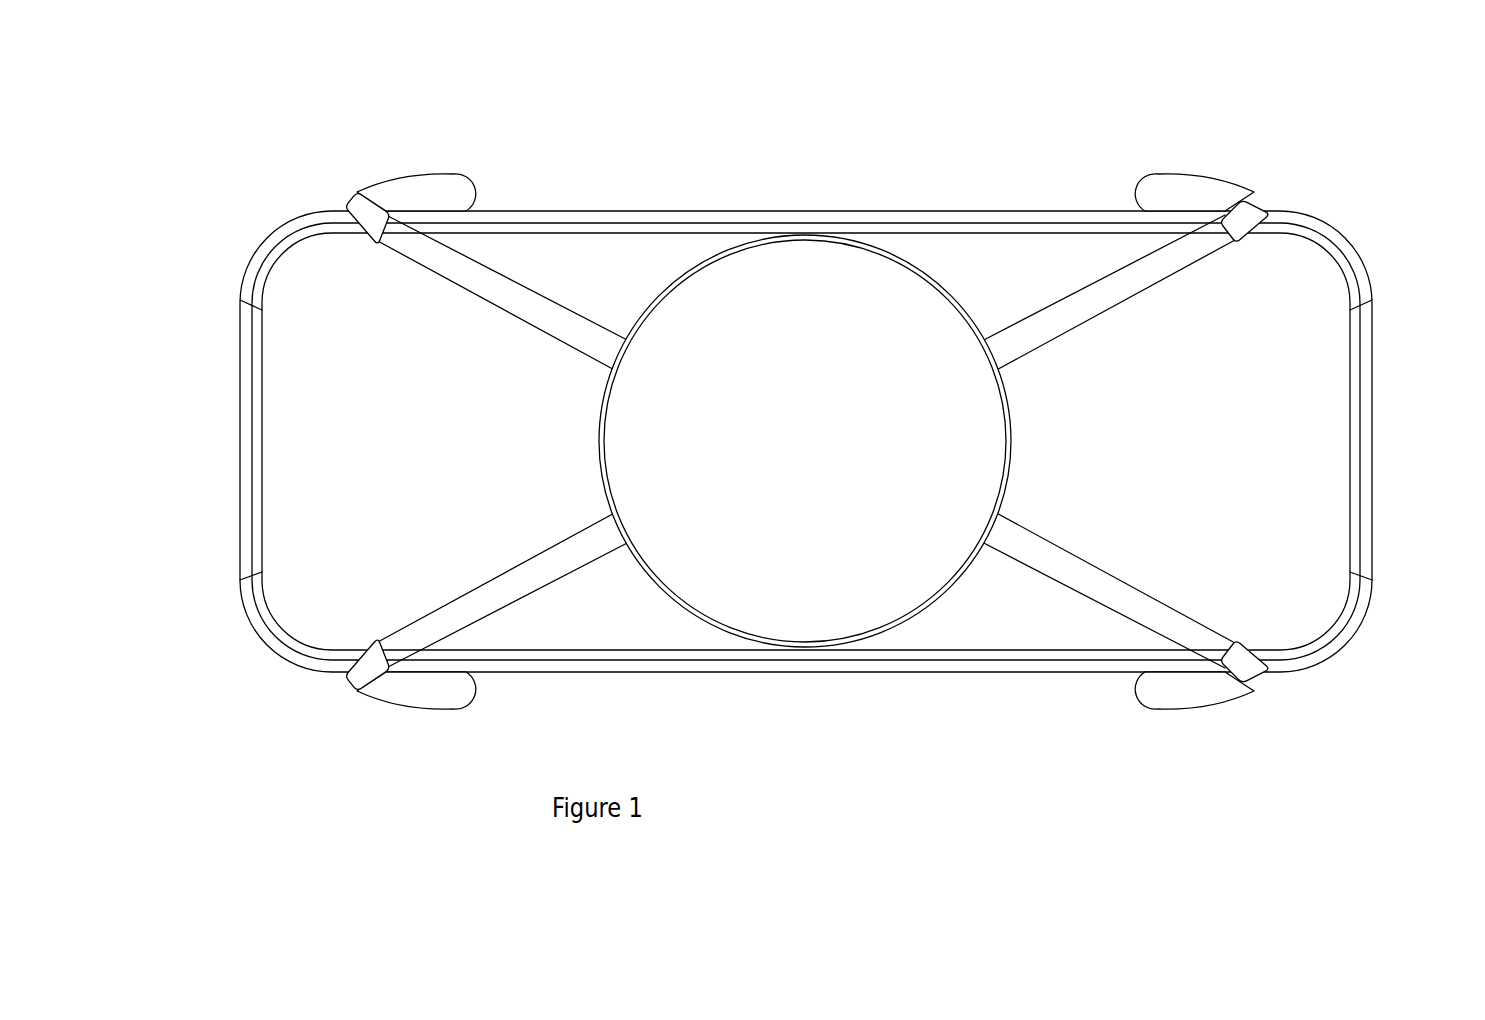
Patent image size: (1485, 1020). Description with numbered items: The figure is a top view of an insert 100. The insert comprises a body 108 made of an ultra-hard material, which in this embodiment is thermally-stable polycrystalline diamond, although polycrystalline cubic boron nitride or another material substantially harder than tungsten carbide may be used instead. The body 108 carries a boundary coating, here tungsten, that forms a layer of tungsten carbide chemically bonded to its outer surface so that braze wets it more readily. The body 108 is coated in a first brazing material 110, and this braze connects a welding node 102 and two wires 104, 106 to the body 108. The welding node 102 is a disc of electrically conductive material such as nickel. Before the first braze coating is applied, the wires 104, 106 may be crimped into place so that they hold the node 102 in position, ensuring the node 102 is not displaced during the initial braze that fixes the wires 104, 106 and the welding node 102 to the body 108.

The insert 100 is at (180, 117).
The welding node 102 is at (752, 270).
The wire 104 is at (408, 203).
The wire 106 is at (1162, 193).
The body 108 is at (978, 290).
The first brazing material 110 is at (1360, 405).